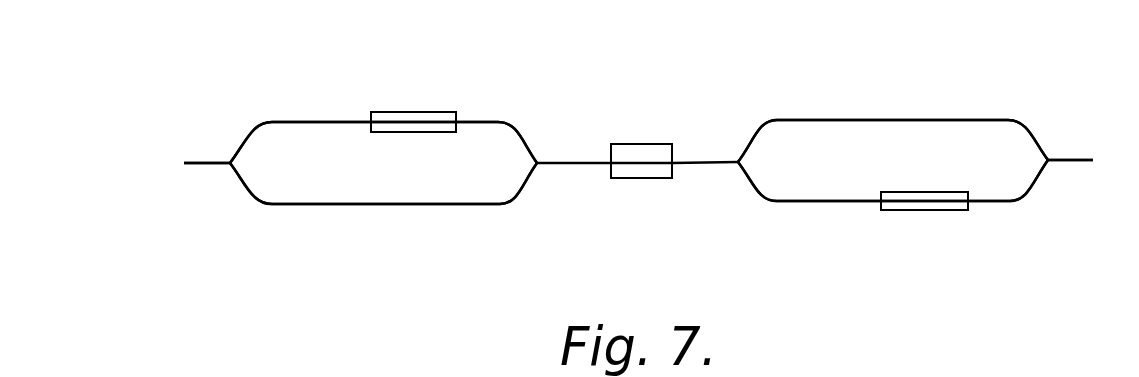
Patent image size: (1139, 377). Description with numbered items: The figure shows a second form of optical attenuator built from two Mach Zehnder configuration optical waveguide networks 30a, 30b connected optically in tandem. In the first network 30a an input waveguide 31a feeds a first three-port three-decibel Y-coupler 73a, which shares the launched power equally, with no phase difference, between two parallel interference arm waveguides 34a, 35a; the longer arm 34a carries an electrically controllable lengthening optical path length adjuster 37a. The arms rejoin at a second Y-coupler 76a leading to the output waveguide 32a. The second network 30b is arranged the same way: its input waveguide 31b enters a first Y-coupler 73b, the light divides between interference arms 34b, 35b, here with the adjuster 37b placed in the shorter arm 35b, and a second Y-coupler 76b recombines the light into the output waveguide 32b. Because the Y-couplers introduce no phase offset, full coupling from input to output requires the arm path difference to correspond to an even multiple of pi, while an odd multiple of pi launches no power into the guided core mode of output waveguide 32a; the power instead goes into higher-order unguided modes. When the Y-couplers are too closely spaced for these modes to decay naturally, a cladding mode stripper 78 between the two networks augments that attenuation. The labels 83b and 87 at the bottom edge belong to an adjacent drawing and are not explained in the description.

The Mach Zehnder configuration optical waveguide network 30a is at (403, 177).
The input waveguide 31a is at (205, 160).
The interference arm waveguide 34a is at (324, 122).
The interference arm waveguide 35a is at (395, 204).
The electrically controllable lengthening optical path length adjuster 37a is at (422, 112).
The first 3-port 3 dB Y-coupler 73a is at (245, 162).
The second 3-port 3 dB Y-coupler 76a is at (520, 163).
The output waveguide 32a is at (561, 163).
The cladding mode stripper 78 is at (650, 170).
The input waveguide 31b is at (715, 163).
The Mach Zehnder configuration optical waveguide network 30b is at (918, 173).
The interference arm waveguide 34b is at (865, 120).
The interference arm waveguide 35b is at (848, 201).
The electrically controllable lengthening optical path length adjuster 37b is at (923, 210).
The first 3-port 3 dB Y-coupler 73b is at (748, 162).
The second 3-port 3 dB Y-coupler 76b is at (1040, 158).
The output waveguide 32b is at (1075, 160).
The element of adjacent figure (partially visible) 87 is at (786, 368).
The element of adjacent figure (partially visible) 83b is at (351, 374).